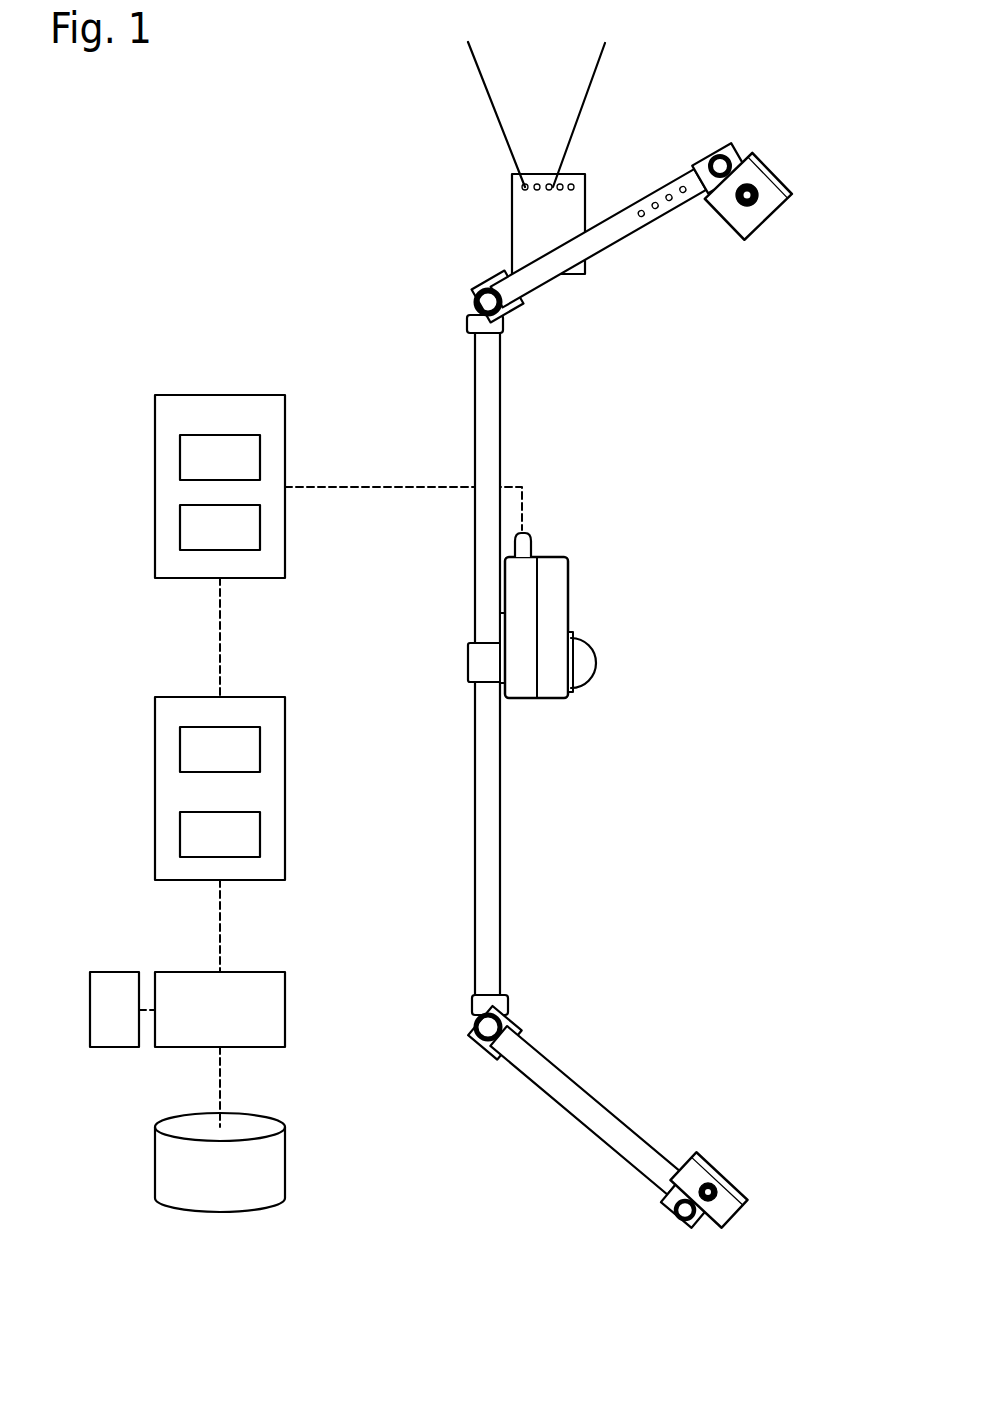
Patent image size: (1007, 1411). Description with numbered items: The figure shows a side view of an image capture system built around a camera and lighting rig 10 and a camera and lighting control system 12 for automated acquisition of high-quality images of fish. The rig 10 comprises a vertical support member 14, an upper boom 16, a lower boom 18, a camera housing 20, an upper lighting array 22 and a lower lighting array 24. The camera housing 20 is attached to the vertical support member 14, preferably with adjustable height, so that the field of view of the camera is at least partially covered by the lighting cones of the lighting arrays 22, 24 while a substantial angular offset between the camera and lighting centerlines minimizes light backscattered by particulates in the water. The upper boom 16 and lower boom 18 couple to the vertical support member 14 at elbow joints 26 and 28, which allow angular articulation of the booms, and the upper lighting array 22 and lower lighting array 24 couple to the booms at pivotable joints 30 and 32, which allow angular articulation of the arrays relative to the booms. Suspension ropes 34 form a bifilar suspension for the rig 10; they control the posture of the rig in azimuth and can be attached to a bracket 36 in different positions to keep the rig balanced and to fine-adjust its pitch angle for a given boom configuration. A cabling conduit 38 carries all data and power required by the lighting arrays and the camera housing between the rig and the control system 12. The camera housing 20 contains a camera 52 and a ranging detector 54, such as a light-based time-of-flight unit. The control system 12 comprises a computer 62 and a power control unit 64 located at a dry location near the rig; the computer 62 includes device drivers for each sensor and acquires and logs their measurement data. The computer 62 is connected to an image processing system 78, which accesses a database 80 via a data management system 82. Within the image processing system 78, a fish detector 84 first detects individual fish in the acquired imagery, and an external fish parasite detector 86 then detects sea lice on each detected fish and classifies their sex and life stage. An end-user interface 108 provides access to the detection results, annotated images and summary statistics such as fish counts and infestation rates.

The camera and lighting rig 10 is at (332, 240).
The camera and lighting control system 12 is at (215, 425).
The vertical support member 14 is at (477, 950).
The upper boom 16 is at (585, 247).
The lower boom 18 is at (577, 1110).
The camera housing 20 is at (656, 622).
The upper lighting array 22 is at (750, 215).
The lower lighting array 24 is at (707, 1160).
The elbow joint 26 is at (475, 302).
The elbow joint 28 is at (488, 1027).
The pivotable joint 30 is at (720, 157).
The pivotable joint 32 is at (685, 1220).
The suspension ropes 34 is at (478, 77).
The bracket 36 is at (523, 217).
The cabling conduit 38 is at (408, 490).
The camera 52 is at (583, 663).
The ranging detector 54 is at (570, 580).
The computer 62 is at (190, 527).
The power control unit 64 is at (190, 455).
The image processing system 78 is at (192, 788).
The database 80 is at (192, 1175).
The data management system 82 is at (270, 993).
The fish detector 84 is at (242, 748).
The external fish parasite detector 86 is at (242, 835).
The end-user interface 108 is at (120, 988).